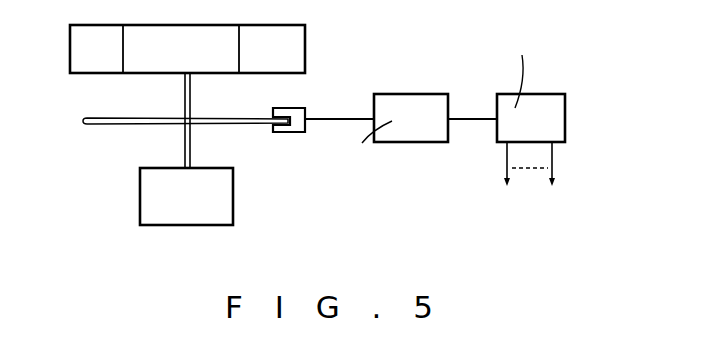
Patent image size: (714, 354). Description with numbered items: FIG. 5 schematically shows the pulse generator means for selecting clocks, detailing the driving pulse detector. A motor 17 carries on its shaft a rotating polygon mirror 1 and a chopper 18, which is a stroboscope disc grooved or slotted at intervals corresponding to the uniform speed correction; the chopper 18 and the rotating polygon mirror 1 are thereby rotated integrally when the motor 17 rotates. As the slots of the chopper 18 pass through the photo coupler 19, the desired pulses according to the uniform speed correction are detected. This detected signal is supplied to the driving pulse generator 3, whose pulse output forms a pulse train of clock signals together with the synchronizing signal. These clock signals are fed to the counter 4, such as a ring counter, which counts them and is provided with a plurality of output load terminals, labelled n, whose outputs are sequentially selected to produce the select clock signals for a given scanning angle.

The rotating polygon mirror 1 is at (310, 41).
The driving pulse generator 3 is at (420, 93).
The counter 4 is at (537, 93).
The motor 17 is at (140, 205).
The chopper 18 is at (103, 128).
The photo coupler 19 is at (293, 133).